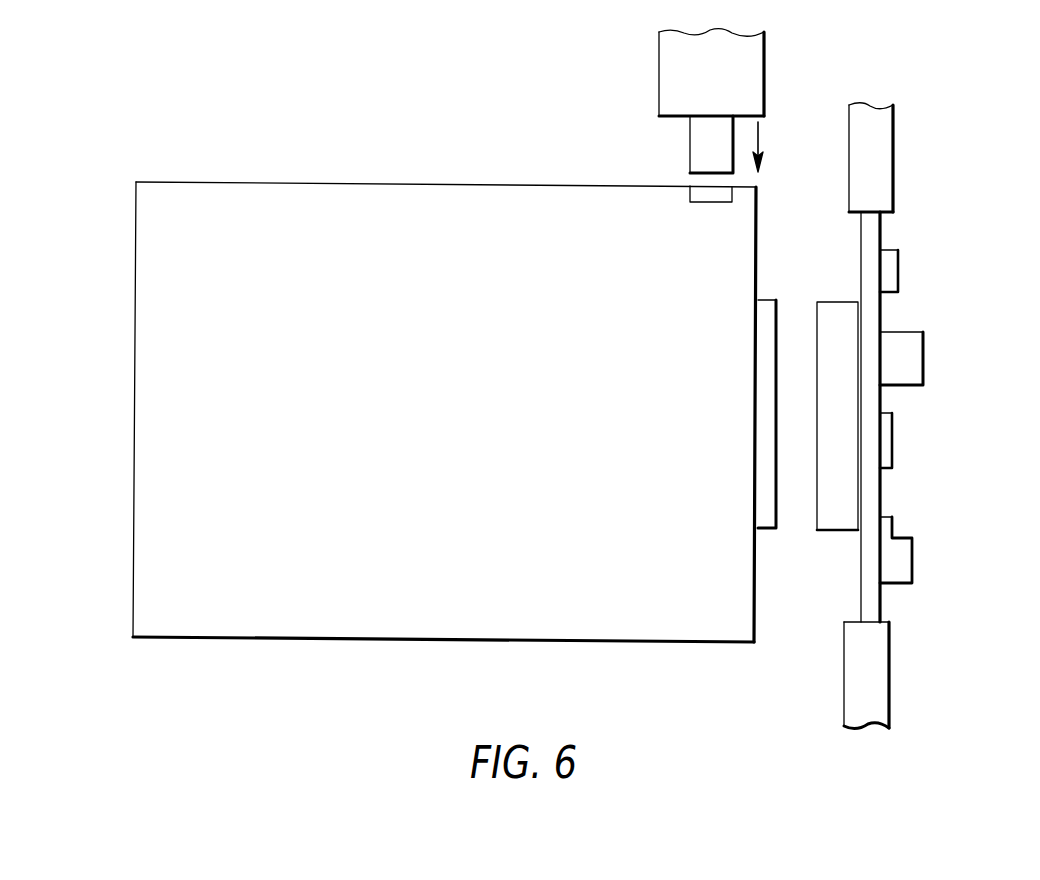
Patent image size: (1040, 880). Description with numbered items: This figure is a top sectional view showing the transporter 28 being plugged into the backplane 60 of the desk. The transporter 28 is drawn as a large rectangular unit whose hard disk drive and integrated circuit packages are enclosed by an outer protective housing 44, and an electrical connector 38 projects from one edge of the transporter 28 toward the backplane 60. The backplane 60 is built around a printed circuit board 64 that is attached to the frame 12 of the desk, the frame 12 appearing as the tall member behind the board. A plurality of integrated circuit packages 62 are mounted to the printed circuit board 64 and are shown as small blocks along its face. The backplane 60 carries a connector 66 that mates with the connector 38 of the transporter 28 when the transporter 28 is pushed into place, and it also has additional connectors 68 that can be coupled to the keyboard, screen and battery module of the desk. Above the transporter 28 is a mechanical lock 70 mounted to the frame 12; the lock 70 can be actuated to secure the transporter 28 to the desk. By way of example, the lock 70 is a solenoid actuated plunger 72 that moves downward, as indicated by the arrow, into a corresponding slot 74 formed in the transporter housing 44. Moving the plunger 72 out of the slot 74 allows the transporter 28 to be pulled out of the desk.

The frame 12 is at (880, 132).
The transporter 28 is at (195, 418).
The electrical connector 38 is at (760, 488).
The outer protective housing 44 is at (443, 573).
The backplane 60 is at (868, 313).
The integrated circuit packages 62 is at (887, 440).
The printed circuit board 64 is at (868, 503).
The connector 66 is at (838, 318).
The additional connectors 68 is at (905, 355).
The mechanical lock 70 is at (720, 77).
The solenoid actuated plunger 72 is at (688, 142).
The slot 74 is at (693, 190).